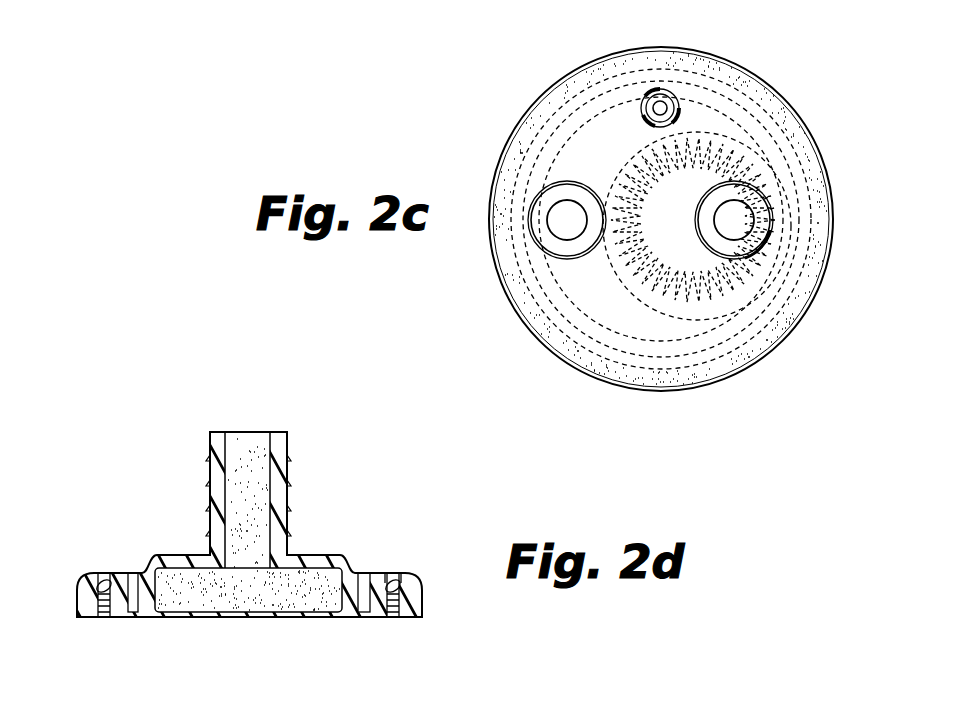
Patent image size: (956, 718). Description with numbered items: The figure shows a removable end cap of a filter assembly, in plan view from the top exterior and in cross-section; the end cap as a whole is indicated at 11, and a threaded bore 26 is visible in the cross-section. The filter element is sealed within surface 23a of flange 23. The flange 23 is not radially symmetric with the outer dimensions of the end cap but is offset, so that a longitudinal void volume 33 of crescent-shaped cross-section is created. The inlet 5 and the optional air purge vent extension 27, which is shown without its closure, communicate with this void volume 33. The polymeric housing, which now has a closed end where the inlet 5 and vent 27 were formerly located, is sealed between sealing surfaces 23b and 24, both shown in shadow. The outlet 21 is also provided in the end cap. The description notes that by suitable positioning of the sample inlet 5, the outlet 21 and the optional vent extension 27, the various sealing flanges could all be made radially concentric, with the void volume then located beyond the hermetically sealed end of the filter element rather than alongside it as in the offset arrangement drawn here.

In FIG. 2C, the coupling body 11 is at (842, 148).
In FIG. 2D, the coupling body 11 is at (334, 533).
In FIG. 2C, the inlet 5 is at (567, 196).
In FIG. 2C, the outlet 21 is at (762, 247).
In FIG. 2C, the air purge vent extension 27 is at (660, 100).
In FIG. 2C, the longitudinal void volume 33 is at (593, 152).
In FIG. 2C, the sealing surface 24 is at (748, 118).
In FIG. 2D, the sealing surface 24 is at (399, 617).
In FIG. 2C, the sealing surface 23b is at (803, 130).
In FIG. 2D, the sealing surface 23b is at (392, 613).
In FIG. 2C, the flange 23 is at (680, 315).
In FIG. 2C, the surface of flange 23a is at (712, 322).
In FIG. 2D, the threaded bore 26 is at (104, 586).